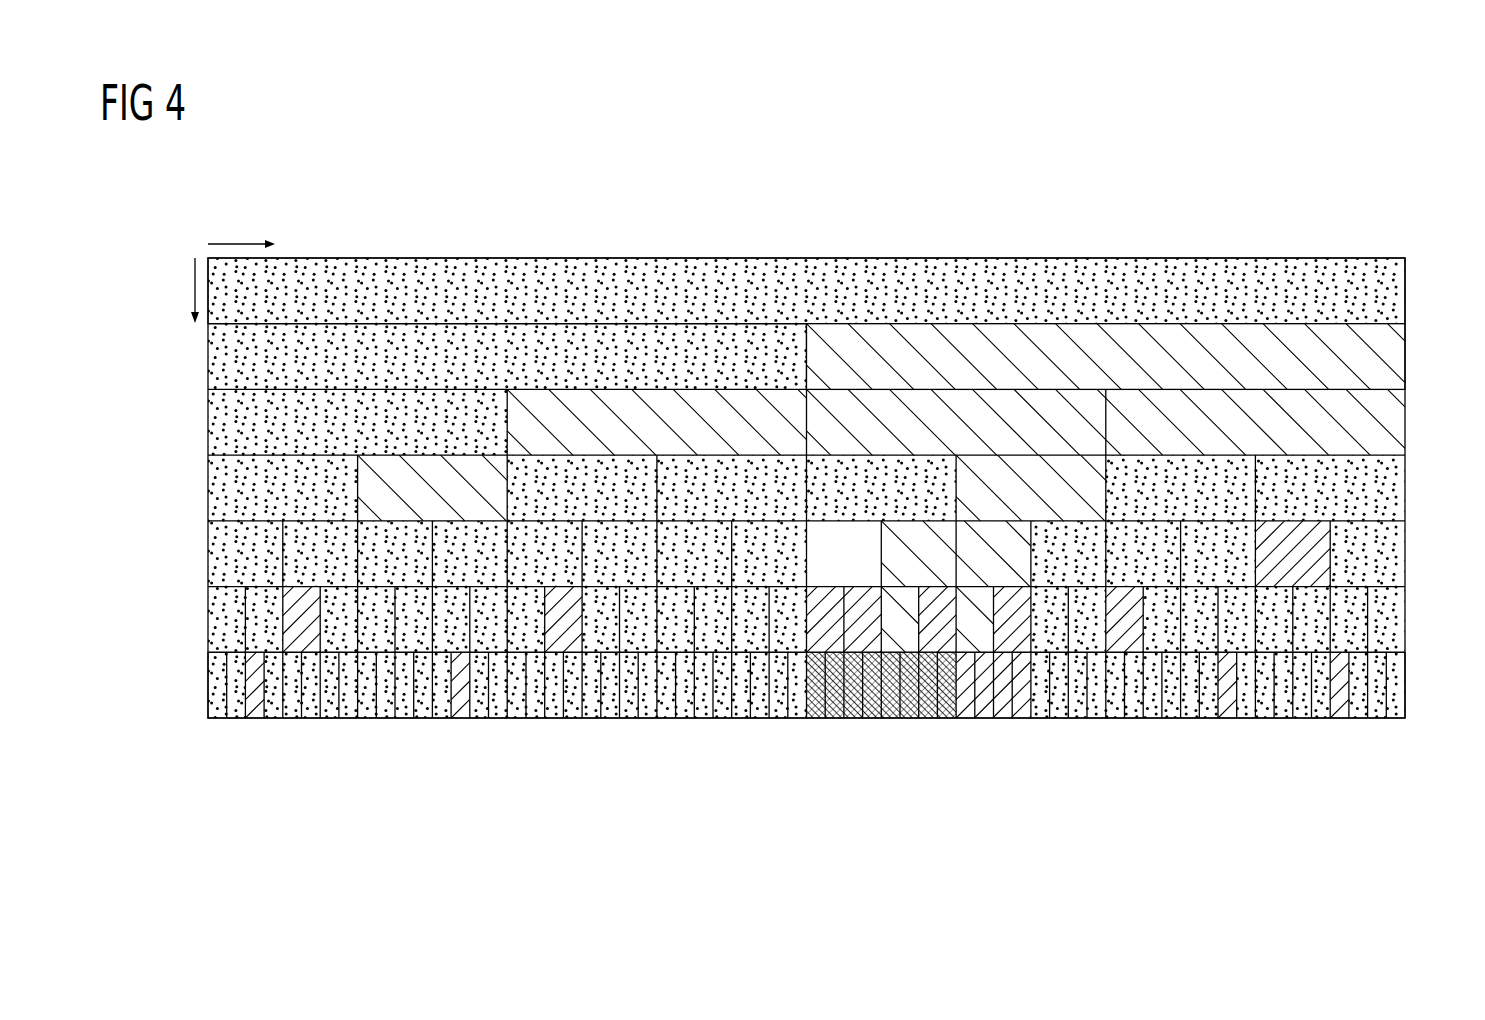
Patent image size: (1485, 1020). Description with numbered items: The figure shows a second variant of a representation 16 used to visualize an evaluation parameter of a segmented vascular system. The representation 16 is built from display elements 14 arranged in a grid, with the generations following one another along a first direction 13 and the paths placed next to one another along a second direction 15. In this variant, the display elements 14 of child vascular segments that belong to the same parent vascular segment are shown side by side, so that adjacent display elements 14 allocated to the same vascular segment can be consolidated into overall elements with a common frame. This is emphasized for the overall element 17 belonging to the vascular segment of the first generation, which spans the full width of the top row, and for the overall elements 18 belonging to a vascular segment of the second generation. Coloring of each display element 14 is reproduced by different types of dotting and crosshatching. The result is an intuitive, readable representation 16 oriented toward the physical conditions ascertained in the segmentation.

The first direction 13 is at (195, 288).
The display elements 14 is at (383, 718).
The second direction 15 is at (243, 244).
The representation 16 is at (178, 396).
The overall element 17 is at (1392, 289).
The overall elements 18 is at (1392, 357).